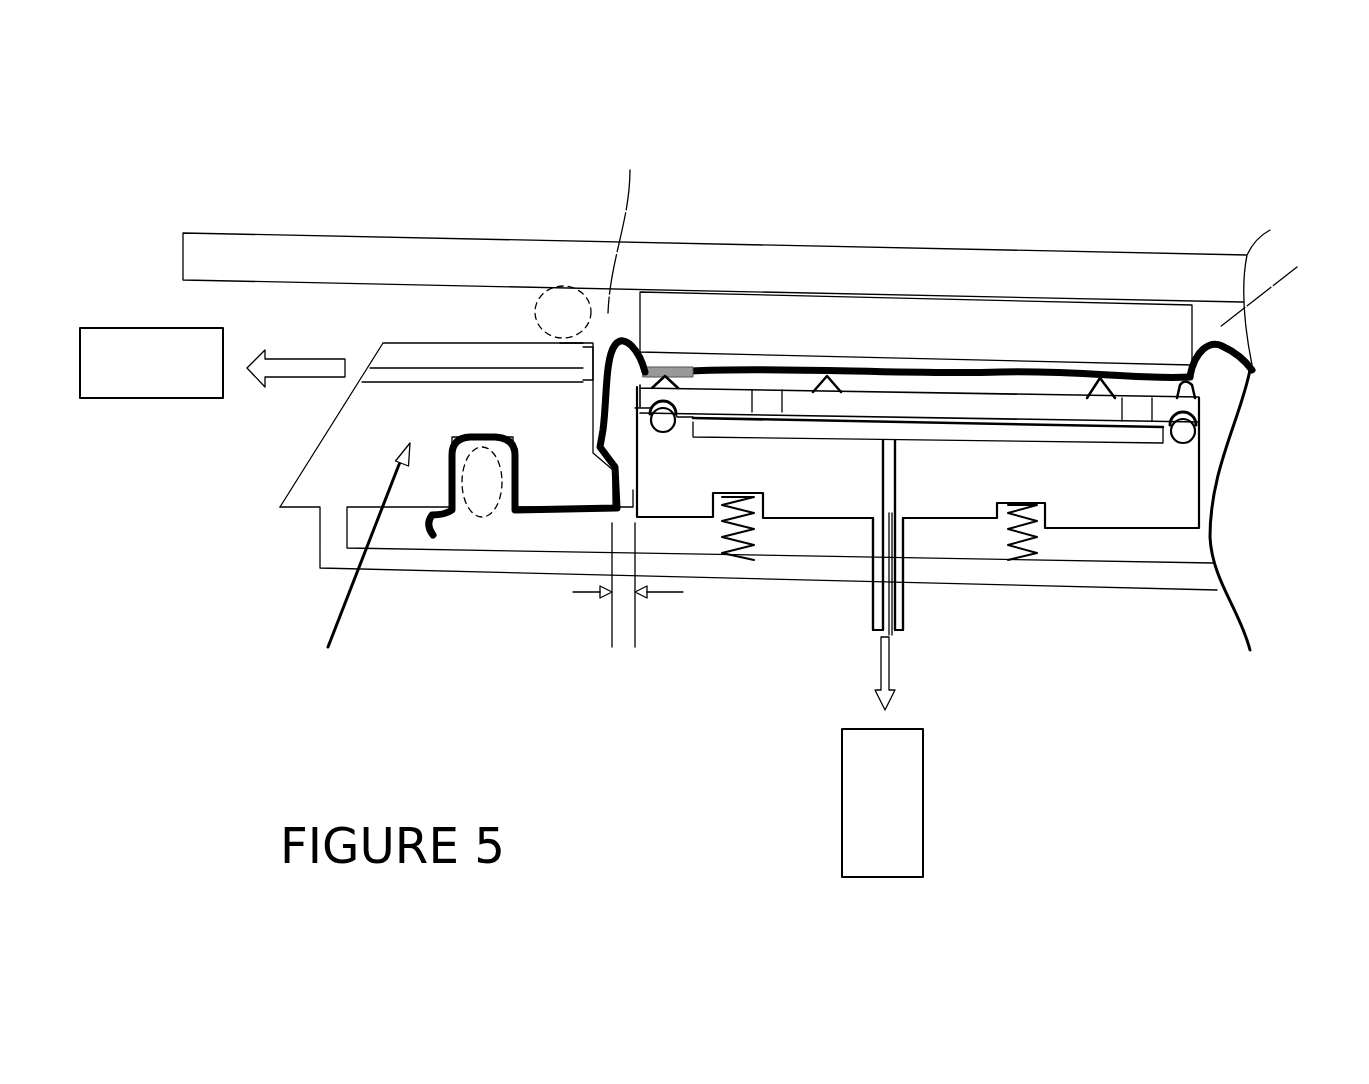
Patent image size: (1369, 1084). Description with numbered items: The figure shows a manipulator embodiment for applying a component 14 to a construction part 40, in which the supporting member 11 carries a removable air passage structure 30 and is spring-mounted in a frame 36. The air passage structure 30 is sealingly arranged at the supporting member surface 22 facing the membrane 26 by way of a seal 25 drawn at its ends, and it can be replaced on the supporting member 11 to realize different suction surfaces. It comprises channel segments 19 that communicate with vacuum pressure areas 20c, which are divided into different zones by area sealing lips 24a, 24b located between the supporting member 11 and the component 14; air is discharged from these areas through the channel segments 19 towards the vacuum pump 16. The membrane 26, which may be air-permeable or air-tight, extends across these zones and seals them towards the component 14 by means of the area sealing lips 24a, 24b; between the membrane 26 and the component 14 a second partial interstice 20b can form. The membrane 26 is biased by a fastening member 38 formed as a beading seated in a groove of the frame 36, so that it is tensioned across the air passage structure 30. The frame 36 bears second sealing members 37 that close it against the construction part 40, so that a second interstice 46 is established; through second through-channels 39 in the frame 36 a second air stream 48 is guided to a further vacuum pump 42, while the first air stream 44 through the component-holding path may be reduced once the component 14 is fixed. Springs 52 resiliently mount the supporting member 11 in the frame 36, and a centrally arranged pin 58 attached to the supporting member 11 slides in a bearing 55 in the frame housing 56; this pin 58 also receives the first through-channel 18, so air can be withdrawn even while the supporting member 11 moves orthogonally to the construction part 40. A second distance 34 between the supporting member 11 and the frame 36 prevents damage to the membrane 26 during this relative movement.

The supporting member 11 is at (957, 497).
The component 14 is at (1043, 317).
The vacuum pump 16 is at (898, 823).
The first through-channel 18 is at (902, 527).
The channel segments 19 is at (763, 403).
The second partial interstice 20b is at (917, 362).
The vacuum pressure areas 20c is at (1137, 390).
The supporting member surface 22 is at (855, 442).
The area sealing lip 24a is at (830, 383).
The area sealing lip 24b is at (1198, 378).
The seal 25 is at (662, 432).
The membrane 26 is at (622, 337).
The air passage structure 30 is at (1013, 410).
The second distance 34 is at (634, 585).
The frame 36 is at (357, 564).
The second sealing members 37 is at (547, 290).
The fastening member 38 is at (483, 515).
The second through-channels 39 is at (418, 377).
The construction part 40 is at (862, 267).
The vacuum pump 42 is at (153, 380).
The first air stream 44 is at (892, 673).
The second interstice 46 is at (964, 234).
The second air stream 48 is at (292, 383).
The springs 52 is at (740, 560).
The bearing 55 is at (902, 583).
The frame housing 56 is at (430, 562).
The pin 58 is at (867, 602).